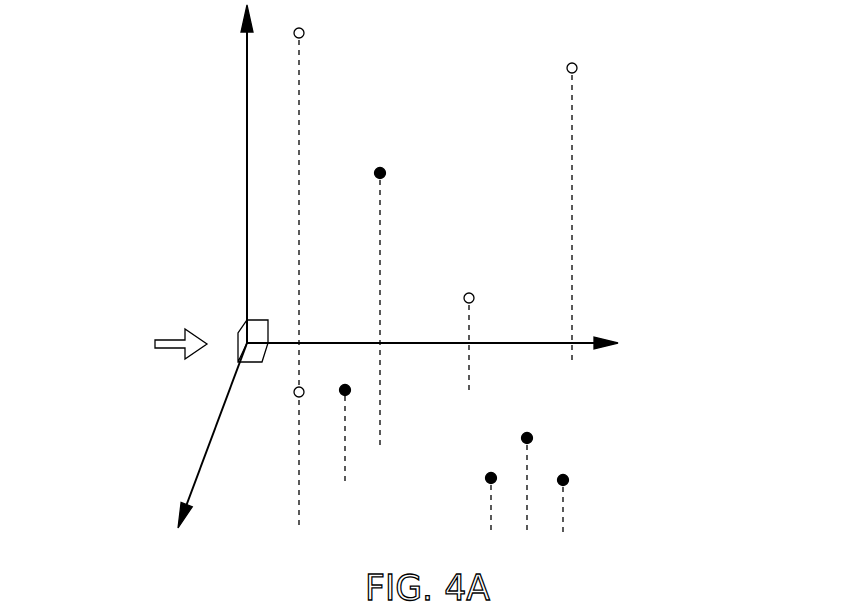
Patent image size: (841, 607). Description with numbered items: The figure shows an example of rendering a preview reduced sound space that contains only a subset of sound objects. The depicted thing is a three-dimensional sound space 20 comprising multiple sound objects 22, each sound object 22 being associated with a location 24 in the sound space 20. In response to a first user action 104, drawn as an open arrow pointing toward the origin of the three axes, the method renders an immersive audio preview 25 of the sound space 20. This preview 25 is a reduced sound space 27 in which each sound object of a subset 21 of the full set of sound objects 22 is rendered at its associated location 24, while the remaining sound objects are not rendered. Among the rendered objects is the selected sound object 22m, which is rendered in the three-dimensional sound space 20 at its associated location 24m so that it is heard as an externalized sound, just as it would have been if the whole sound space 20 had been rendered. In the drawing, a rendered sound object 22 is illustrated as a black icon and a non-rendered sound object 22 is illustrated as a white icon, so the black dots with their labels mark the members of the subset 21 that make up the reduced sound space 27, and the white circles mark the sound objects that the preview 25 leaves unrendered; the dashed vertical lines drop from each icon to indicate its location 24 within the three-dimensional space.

The sound space 20 is at (458, 33).
The subset of sound objects 21 is at (624, 123).
The sound object 22 is at (343, 383).
The selected sound object 22m is at (382, 166).
The location 24 is at (352, 392).
The associated location of selected sound object 24m is at (386, 180).
The immersive audio preview 25 is at (225, 253).
The reduced sound space 27 is at (208, 385).
The user actuation 104 is at (155, 340).